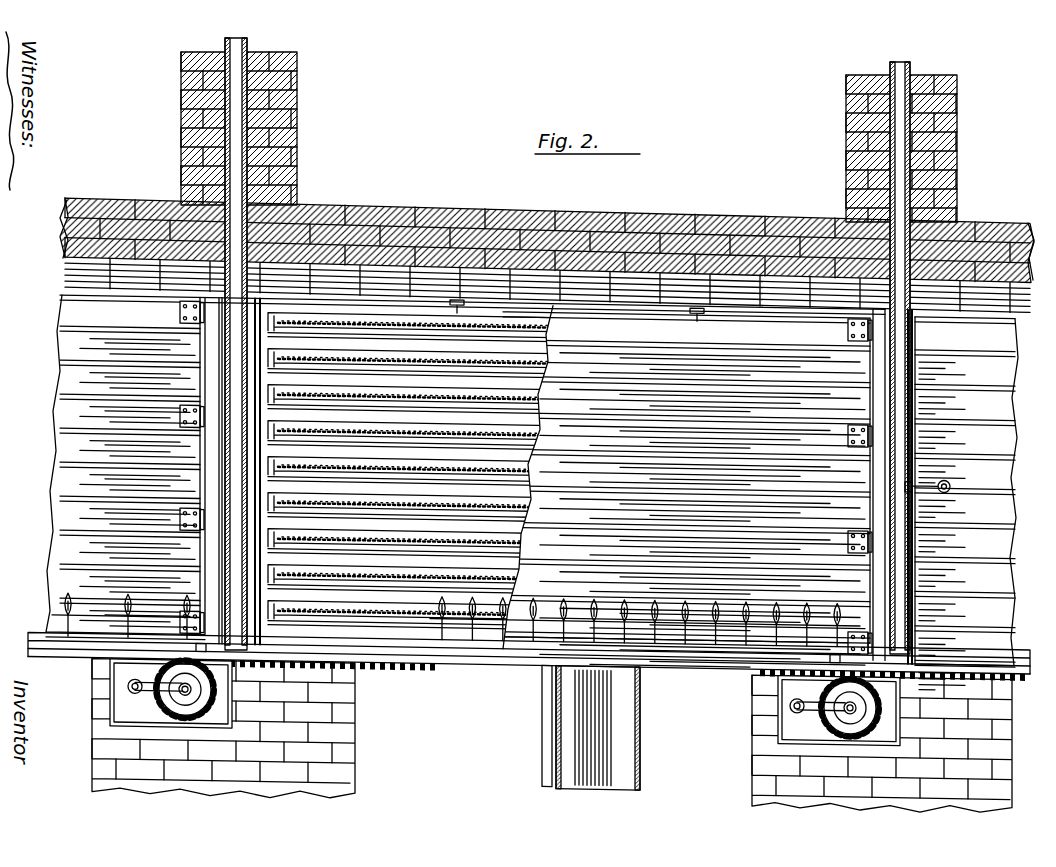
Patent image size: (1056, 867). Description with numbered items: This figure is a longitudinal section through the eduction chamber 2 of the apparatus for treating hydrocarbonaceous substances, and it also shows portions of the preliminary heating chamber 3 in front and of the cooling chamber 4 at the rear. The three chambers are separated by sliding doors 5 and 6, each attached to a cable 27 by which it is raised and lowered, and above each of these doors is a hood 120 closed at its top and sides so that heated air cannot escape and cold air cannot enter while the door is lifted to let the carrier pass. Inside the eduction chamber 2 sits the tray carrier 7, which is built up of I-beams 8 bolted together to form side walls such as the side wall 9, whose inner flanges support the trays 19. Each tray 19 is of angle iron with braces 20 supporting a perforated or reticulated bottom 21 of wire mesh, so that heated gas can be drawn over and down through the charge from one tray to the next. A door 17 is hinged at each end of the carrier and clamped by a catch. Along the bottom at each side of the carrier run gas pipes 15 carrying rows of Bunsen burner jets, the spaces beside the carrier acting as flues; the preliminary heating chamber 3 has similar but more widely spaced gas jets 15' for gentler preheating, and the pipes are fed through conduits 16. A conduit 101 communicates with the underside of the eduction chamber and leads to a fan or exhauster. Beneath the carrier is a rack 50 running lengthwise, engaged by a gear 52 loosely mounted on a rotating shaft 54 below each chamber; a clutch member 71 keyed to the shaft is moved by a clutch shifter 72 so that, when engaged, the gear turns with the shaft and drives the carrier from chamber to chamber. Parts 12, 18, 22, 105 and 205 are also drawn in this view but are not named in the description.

The eduction chamber 2 is at (682, 250).
The preliminary heating chamber 3 is at (125, 232).
The cooling chamber 4 is at (1000, 262).
The hood 120 is at (248, 42).
The cable 27 is at (248, 150).
The hanger 22 is at (458, 298).
The I-beam 8 is at (537, 319).
The tray carrier 7 is at (537, 508).
The side wall 9 is at (55, 418).
The perforated or reticulated bottom 21 is at (542, 328).
The tray 19 is at (540, 360).
The brace 20 is at (353, 480).
The door 17 is at (255, 470).
The handle 18 is at (905, 476).
The gas pipe 15 is at (645, 605).
The gas jet 15' is at (126, 609).
The door 5 is at (222, 557).
The door 6 is at (878, 578).
The base plate 12 is at (466, 668).
The base beam 205 is at (726, 670).
The rack 50 is at (585, 678).
The conduit 16 is at (542, 719).
The conduit 101 is at (640, 740).
The clutch member 71 is at (128, 686).
The clutch shifter 72 is at (150, 690).
The gear box 105 is at (110, 712).
The gear 52 is at (178, 698).
The rotating shaft 54 is at (212, 690).